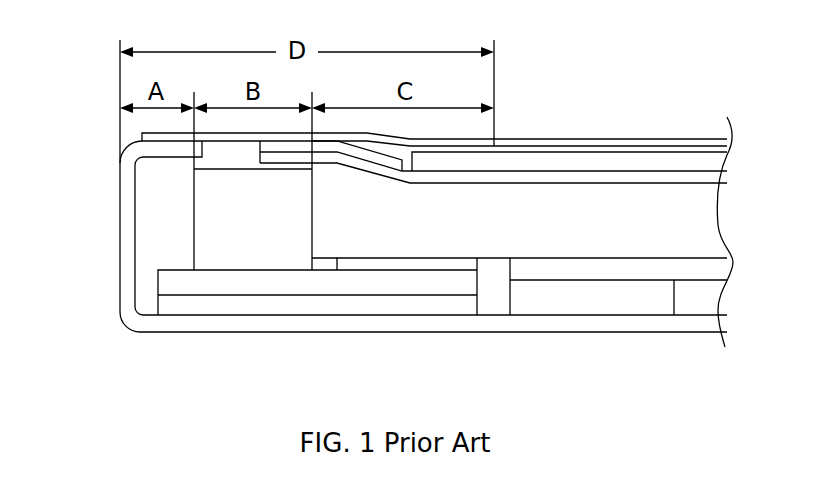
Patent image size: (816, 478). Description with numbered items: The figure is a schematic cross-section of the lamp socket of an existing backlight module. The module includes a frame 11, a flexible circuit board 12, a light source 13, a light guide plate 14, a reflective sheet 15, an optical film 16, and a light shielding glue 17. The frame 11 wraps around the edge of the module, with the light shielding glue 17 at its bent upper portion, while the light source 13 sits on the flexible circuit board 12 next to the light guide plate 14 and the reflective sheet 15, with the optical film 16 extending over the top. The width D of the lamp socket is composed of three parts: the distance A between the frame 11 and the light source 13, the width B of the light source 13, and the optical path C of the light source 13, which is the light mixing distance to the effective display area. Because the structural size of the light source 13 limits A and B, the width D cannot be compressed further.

The frame 11 is at (125, 228).
The flexible circuit board 12 is at (223, 285).
The light source 13 is at (275, 242).
The light guide plate 14 is at (548, 225).
The reflective sheet 15 is at (682, 268).
The optical film 16 is at (498, 178).
The light shielding glue 17 is at (170, 137).